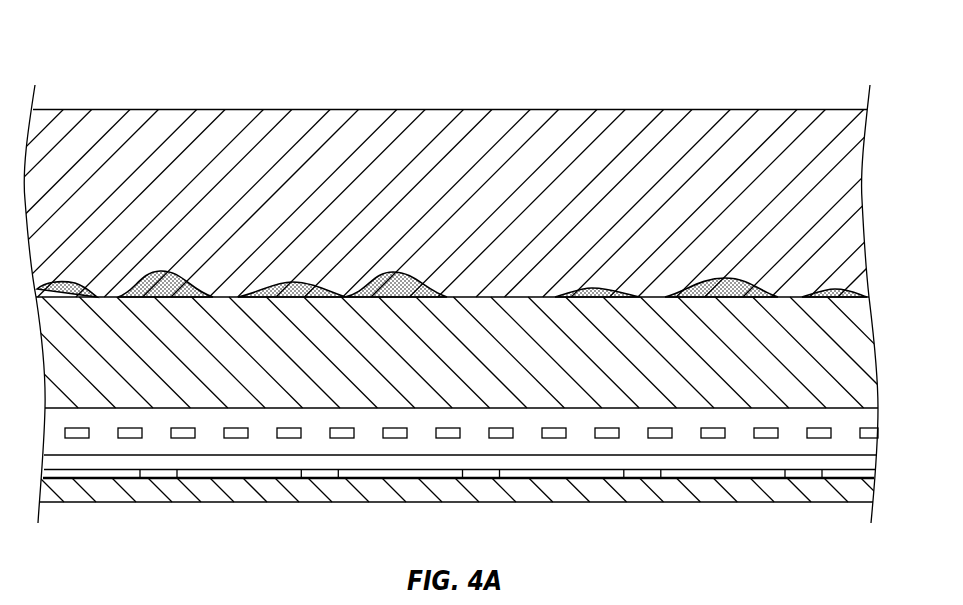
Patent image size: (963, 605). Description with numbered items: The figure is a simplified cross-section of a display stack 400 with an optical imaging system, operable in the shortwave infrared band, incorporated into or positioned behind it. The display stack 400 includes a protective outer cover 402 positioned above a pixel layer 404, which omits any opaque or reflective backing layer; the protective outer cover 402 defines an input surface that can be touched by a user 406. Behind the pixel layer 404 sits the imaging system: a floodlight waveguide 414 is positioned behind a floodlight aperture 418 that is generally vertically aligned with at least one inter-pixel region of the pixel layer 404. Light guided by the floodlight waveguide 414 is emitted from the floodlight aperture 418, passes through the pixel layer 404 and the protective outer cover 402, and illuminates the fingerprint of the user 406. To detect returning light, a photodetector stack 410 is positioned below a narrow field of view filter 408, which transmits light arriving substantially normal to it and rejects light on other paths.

The display stack 400 is at (130, 60).
The protective outer cover 402 is at (876, 335).
The pixel layer 404 is at (885, 408).
The user 406 is at (863, 207).
The narrow field of view filter 408 is at (878, 459).
The photodetector stack 410 is at (806, 479).
The floodlight waveguide 414 is at (875, 488).
The floodlight aperture 418 is at (706, 477).